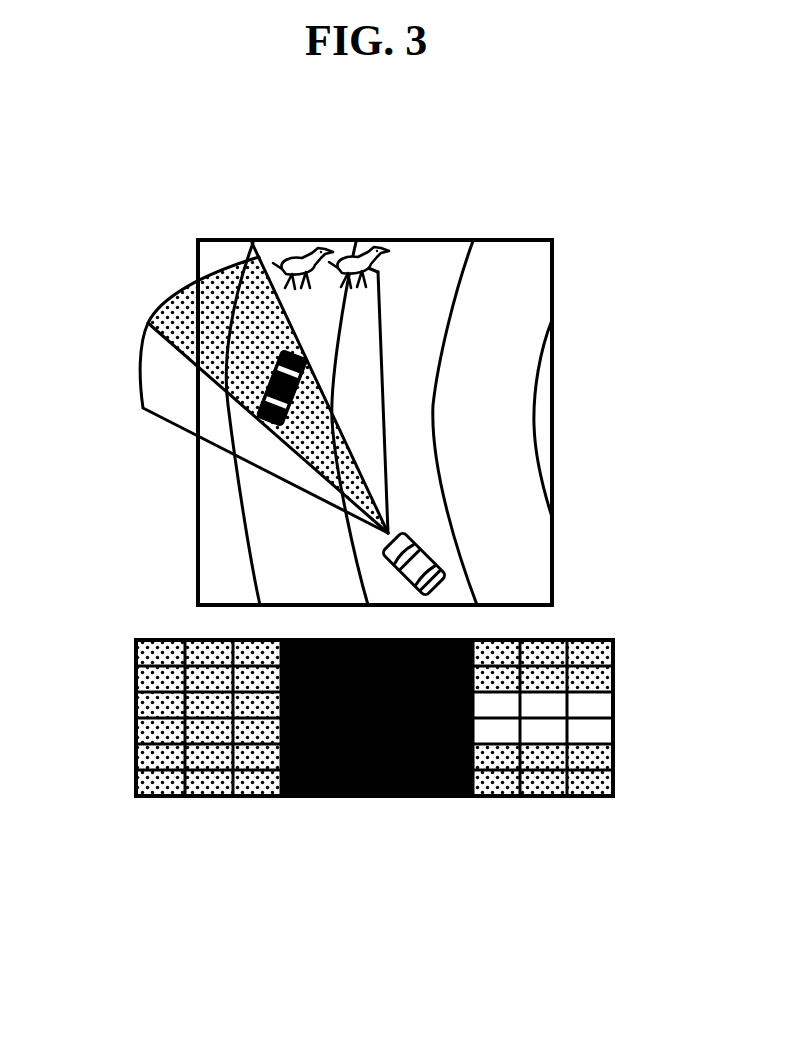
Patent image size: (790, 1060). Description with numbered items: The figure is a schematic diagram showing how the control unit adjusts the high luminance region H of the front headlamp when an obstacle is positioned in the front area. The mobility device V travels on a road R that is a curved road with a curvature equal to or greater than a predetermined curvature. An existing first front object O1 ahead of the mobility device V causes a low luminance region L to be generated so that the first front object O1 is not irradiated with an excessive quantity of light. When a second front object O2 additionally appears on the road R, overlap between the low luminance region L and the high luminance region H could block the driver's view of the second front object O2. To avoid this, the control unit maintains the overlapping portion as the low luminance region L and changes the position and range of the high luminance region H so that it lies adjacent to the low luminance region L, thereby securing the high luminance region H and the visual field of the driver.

The first front object O1 is at (262, 386).
The second front object O2 is at (343, 264).
The road R is at (413, 425).
The mobility device V is at (432, 558).
The high luminance region H is at (537, 735).
The low luminance region L is at (298, 796).